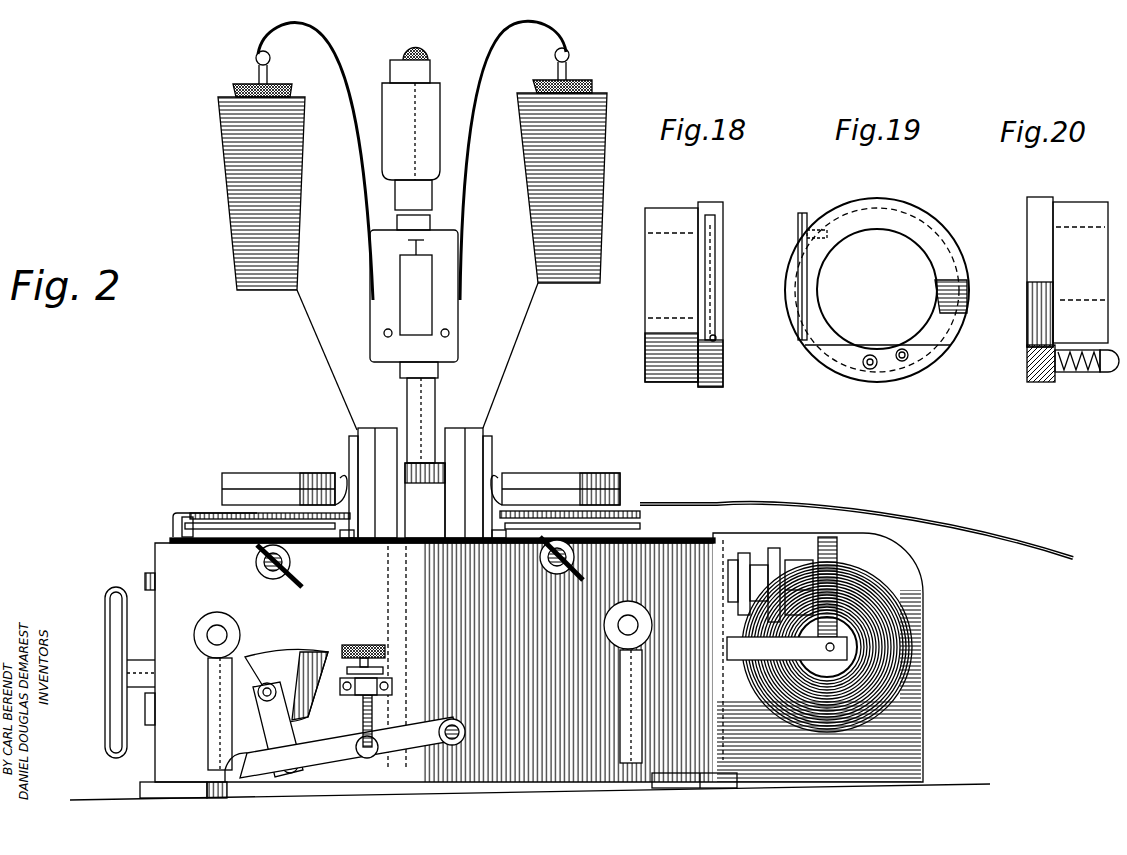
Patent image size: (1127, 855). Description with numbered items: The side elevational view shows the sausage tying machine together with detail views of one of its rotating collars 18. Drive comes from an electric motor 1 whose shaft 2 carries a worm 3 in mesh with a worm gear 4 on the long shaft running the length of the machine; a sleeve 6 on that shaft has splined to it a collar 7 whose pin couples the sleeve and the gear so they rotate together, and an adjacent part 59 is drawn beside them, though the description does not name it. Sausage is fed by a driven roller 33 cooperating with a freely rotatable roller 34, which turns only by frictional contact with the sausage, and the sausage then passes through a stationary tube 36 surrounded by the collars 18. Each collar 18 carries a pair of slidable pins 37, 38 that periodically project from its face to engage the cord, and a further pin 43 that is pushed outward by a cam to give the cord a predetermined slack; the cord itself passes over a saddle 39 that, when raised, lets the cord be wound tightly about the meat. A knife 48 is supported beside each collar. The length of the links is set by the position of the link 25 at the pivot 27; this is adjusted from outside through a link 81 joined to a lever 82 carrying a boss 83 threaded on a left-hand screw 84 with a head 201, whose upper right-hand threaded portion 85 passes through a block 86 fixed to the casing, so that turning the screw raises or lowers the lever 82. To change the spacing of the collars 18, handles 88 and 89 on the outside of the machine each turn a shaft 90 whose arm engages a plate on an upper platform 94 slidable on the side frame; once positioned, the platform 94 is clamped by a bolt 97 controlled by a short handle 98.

In FIG. 2, the electric motor 1 is at (890, 593).
In FIG. 2, the shaft 2 is at (835, 647).
In FIG. 2, the worm 3 is at (845, 625).
In FIG. 2, the worm gear 4 is at (838, 510).
In FIG. 2, the sleeve 6 is at (745, 553).
In FIG. 2, the collar 7 is at (774, 548).
In FIG. 2, the collar 18 is at (358, 440).
In FIG. 18, the collar 18 is at (722, 245).
In FIG. 19, the collar 18 is at (932, 232).
In FIG. 20, the collar 18 is at (1027, 245).
In FIG. 2, the link 25 is at (318, 682).
In FIG. 2, the pivot 27 is at (457, 745).
In FIG. 2, the roller 33 is at (548, 475).
In FIG. 2, the roller 34 is at (288, 455).
In FIG. 2, the stationary tube 36 is at (420, 463).
In FIG. 19, the slidable pin 37 is at (868, 370).
In FIG. 20, the slidable pin 37 is at (1030, 365).
In FIG. 19, the slidable pin 38 is at (906, 362).
In FIG. 2, the saddle 39 is at (342, 488).
In FIG. 19, the pin 43 is at (802, 215).
In FIG. 2, the knife 48 is at (347, 538).
In FIG. 2, the disc 59 is at (797, 560).
In FIG. 2, the link 81 is at (270, 730).
In FIG. 2, the lever 82 is at (420, 745).
In FIG. 2, the boss 83 is at (367, 758).
In FIG. 2, the left-hand screw 84 is at (375, 773).
In FIG. 2, the right-hand threaded portion 85 is at (363, 712).
In FIG. 2, the block 86 is at (392, 684).
In FIG. 2, the handle 88 is at (213, 695).
In FIG. 2, the handle 89 is at (620, 750).
In FIG. 2, the shaft 90 is at (217, 628).
In FIG. 2, the upper platform 94 is at (173, 535).
In FIG. 2, the bolt 97 is at (290, 558).
In FIG. 2, the short handle 98 is at (295, 583).
In FIG. 2, the head 201 is at (367, 637).